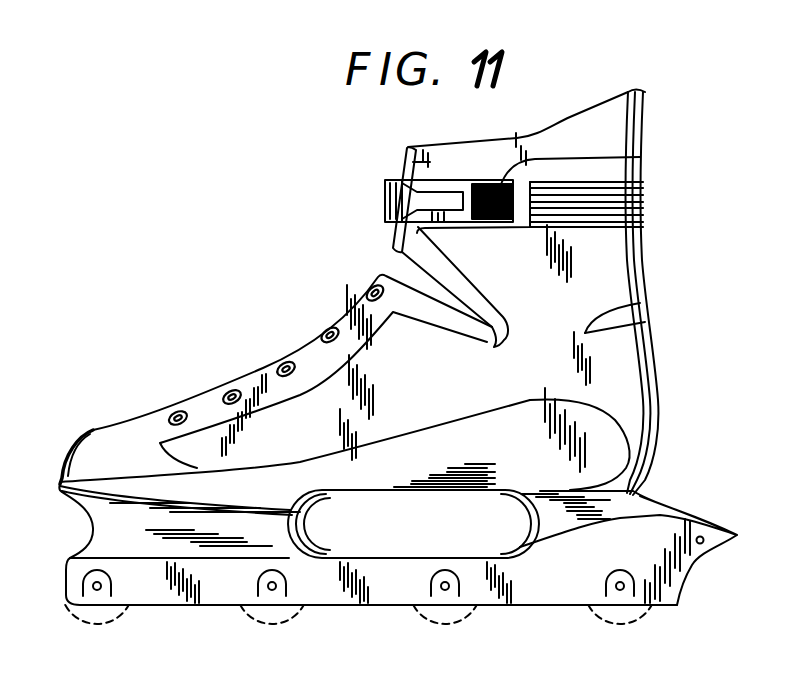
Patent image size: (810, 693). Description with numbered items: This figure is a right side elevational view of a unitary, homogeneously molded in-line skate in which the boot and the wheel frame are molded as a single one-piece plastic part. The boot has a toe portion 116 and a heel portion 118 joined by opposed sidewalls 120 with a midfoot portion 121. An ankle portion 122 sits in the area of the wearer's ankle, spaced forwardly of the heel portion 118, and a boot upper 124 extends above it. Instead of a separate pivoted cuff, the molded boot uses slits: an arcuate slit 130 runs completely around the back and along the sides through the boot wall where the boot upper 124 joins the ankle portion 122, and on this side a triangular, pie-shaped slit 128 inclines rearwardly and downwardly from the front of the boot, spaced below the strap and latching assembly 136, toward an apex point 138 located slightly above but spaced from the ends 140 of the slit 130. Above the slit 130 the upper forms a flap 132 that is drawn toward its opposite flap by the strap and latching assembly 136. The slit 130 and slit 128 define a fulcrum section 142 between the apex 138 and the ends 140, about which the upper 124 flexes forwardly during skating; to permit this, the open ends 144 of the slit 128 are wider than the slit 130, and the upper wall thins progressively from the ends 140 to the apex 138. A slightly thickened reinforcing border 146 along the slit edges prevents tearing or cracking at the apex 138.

The toe portion 116 is at (130, 447).
The heel portion 118 is at (615, 422).
The opposed sidewalls 120 is at (258, 450).
The midfoot portion 121 is at (403, 413).
The ankle portion 122 is at (553, 373).
The boot upper 124 is at (585, 250).
The slit 128 is at (433, 295).
The arcuate slit 130 is at (643, 328).
The flap 132 is at (410, 158).
The strap and latching assembly 136 is at (633, 160).
The apex point 138 is at (494, 347).
The ends of the slit 140 is at (645, 302).
The fulcrum section 142 is at (570, 353).
The open ends of the slits 144 is at (392, 265).
The reinforcing border 146 is at (445, 327).